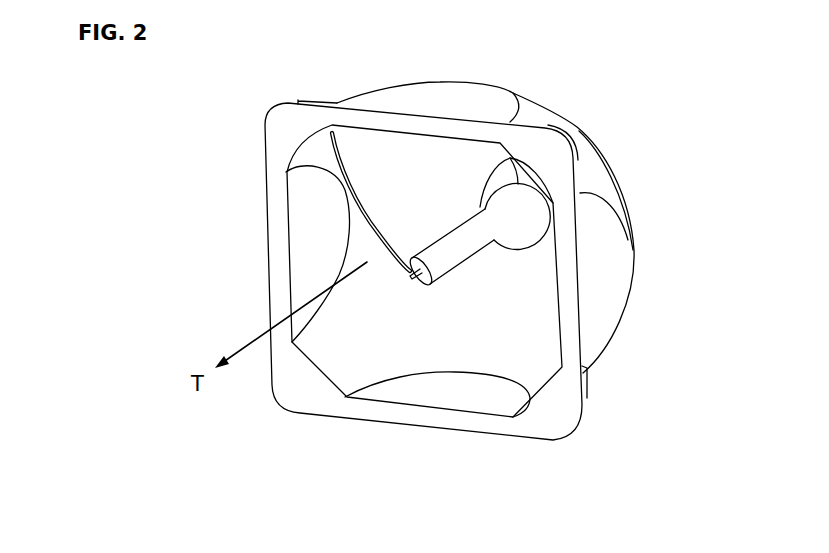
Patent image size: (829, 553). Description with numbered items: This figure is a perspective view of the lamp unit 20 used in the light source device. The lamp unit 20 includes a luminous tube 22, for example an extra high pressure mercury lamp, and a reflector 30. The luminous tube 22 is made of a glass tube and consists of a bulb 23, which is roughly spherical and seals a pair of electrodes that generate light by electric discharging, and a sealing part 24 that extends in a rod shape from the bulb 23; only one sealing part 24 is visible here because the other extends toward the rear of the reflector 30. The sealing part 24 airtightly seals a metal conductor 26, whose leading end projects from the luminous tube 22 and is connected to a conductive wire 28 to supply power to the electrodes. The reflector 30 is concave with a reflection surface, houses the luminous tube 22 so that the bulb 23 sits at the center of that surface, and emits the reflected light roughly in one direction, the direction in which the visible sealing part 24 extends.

The lamp unit 20 is at (268, 82).
The luminous tube 22 is at (570, 300).
The bulb 23 is at (533, 223).
The sealing part 24 is at (460, 253).
The conductor 26 is at (416, 278).
The conductive wire 28 is at (347, 178).
The reflector 30 is at (458, 98).